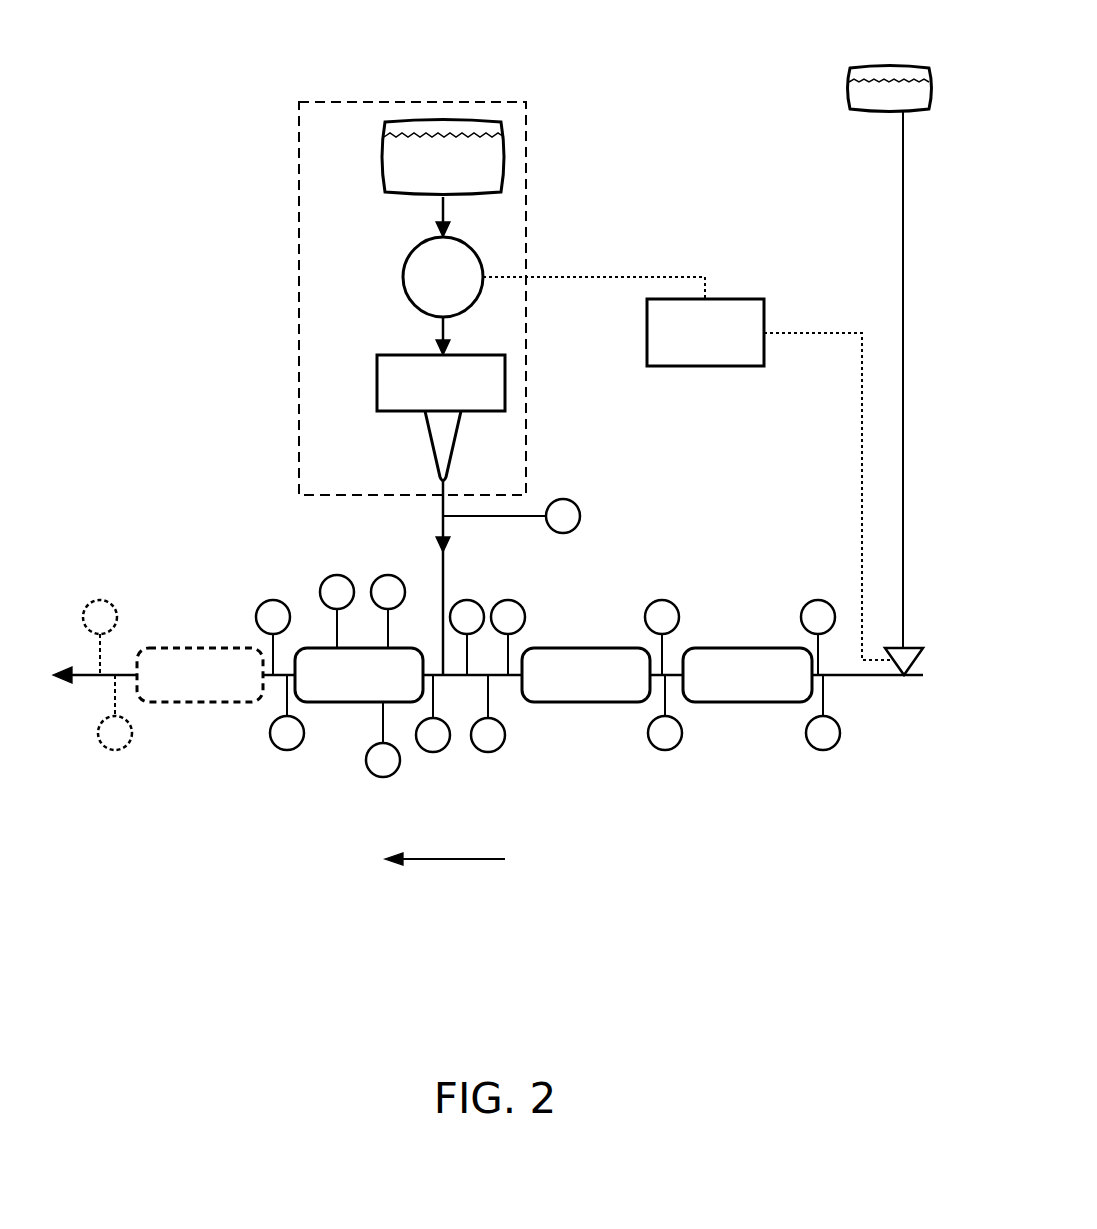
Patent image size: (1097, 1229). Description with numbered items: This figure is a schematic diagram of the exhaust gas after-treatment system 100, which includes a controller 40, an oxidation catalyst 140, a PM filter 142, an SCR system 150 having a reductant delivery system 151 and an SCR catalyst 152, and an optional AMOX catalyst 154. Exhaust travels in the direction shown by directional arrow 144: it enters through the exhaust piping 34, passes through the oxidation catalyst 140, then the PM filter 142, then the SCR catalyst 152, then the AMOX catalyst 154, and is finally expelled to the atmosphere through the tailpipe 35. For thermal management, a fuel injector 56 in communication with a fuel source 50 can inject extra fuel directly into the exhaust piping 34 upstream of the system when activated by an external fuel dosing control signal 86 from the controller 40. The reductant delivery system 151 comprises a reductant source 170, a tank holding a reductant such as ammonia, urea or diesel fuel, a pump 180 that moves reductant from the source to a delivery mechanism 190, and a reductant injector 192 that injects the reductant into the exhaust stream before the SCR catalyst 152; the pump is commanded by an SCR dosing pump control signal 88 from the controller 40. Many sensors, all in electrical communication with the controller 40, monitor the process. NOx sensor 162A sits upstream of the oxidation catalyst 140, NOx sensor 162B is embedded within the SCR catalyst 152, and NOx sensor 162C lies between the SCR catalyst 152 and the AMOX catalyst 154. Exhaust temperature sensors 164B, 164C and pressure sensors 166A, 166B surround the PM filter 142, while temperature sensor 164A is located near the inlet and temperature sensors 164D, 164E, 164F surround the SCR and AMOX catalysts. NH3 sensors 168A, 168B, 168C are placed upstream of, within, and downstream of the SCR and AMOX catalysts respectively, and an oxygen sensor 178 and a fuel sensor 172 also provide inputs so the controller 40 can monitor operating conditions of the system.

The exhaust piping 34 is at (880, 678).
The tailpipe 35 is at (70, 679).
The controller 40 is at (766, 298).
The fuel source 50 is at (847, 92).
The fuel injector 56 is at (906, 648).
The external fuel dosing control signal 86 is at (854, 388).
The SCR dosing pump control signal 88 is at (582, 277).
The exhaust gas after-treatment system 100 is at (244, 942).
The oxidation catalyst 140 is at (730, 704).
The PM filter 142 is at (608, 704).
The directional arrow 144 is at (452, 866).
The SCR system 150 is at (250, 269).
The reductant delivery system 151 is at (415, 100).
The SCR catalyst 152 is at (330, 704).
The AMOX catalyst 154 is at (186, 704).
The NOx sensor 162A is at (808, 600).
The NOx sensor 162B is at (388, 575).
The NOx sensor 162C is at (266, 600).
The temperature sensor 164A is at (823, 750).
The temperature sensor 164B is at (665, 750).
The temperature sensor 164C is at (502, 745).
The temperature sensor 164D is at (384, 778).
The temperature sensor 164E is at (282, 750).
The temperature sensor 164F is at (108, 752).
The pressure sensor 166A is at (662, 600).
The pressure sensor 166B is at (522, 606).
The NH3 sensor 168A is at (433, 752).
The NH3 sensor 168B is at (337, 575).
The NH3 sensor 168C is at (100, 600).
The reductant source 170 is at (379, 154).
The fuel sensor 172 is at (573, 500).
The oxygen sensor 178 is at (470, 600).
The pump 180 is at (403, 278).
The delivery mechanism 190 is at (377, 380).
The reductant injector 192 is at (428, 452).